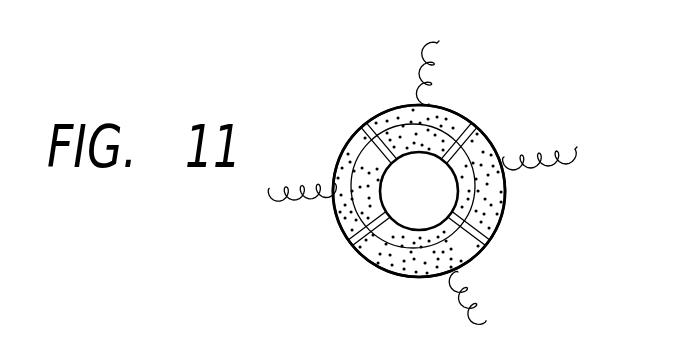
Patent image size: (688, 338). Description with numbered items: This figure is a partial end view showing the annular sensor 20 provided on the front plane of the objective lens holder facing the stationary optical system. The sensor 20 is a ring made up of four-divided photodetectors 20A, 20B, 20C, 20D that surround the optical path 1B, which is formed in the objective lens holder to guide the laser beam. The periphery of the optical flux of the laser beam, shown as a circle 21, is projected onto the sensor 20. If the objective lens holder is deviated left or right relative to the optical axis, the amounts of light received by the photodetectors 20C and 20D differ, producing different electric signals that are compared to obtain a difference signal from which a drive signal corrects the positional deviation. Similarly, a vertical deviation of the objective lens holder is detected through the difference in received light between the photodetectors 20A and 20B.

The annular sensor 20 is at (397, 90).
The photodetector 20A is at (451, 110).
The photodetector 20B is at (409, 262).
The photodetector 20C is at (487, 202).
The photodetector 20D is at (352, 232).
The circle 21 is at (498, 131).
The optical path 1B is at (396, 181).